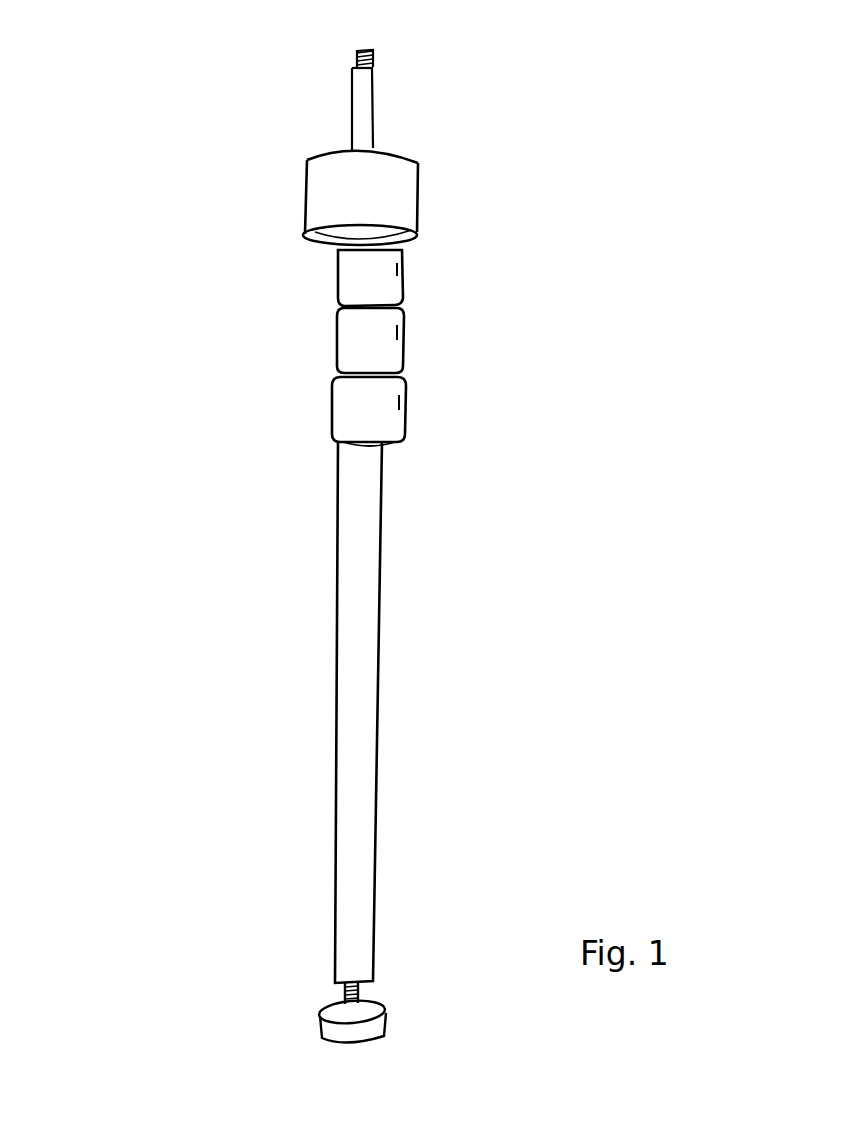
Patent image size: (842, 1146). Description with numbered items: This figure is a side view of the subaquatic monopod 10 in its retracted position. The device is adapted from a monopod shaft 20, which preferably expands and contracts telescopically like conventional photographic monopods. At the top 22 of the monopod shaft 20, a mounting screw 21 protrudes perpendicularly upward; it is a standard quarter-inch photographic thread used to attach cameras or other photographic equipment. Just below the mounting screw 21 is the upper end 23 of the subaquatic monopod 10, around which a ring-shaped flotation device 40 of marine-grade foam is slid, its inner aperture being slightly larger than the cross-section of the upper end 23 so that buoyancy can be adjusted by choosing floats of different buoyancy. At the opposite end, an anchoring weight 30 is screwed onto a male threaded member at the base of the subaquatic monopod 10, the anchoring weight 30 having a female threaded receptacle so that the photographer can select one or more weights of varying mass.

The subaquatic monopod 10 is at (42, 395).
The monopod shaft 20 is at (350, 613).
The mounting screw 21 is at (371, 47).
The top 22 is at (355, 63).
The upper end 23 is at (368, 112).
The anchoring weight 30 is at (319, 1018).
The flotation device 40 is at (307, 203).